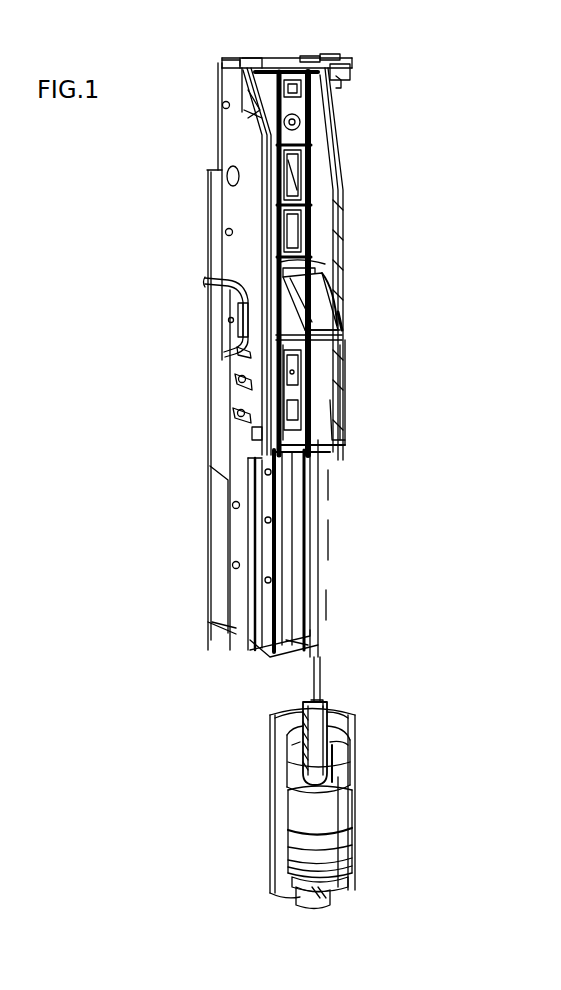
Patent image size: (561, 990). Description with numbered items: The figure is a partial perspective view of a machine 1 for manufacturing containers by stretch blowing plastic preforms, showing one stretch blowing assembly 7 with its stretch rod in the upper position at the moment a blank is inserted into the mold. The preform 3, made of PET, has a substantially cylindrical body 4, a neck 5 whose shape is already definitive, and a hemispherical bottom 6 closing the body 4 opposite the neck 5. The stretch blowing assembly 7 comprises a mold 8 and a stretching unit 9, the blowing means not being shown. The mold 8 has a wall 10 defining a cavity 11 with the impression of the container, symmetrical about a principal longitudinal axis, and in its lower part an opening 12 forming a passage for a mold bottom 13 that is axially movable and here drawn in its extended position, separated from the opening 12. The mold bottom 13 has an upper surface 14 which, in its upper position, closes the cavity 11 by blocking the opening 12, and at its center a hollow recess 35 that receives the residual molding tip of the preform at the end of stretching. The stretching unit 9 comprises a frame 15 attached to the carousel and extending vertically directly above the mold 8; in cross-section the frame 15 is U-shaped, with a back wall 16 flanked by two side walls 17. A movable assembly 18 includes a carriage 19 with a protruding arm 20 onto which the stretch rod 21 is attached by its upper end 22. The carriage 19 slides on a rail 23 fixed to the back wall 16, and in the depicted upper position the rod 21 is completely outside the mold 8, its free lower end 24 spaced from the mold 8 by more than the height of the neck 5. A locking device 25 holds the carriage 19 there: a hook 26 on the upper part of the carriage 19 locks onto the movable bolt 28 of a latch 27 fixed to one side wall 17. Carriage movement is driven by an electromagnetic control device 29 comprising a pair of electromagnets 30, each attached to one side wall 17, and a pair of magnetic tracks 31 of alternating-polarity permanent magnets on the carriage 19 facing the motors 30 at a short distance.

The machine 1 is at (452, 247).
The preform 3 is at (350, 746).
The body 4 is at (333, 777).
The neck 5 is at (325, 707).
The bottom 6 is at (346, 791).
The stretch blowing assembly 7 is at (150, 665).
The mold 8 is at (268, 748).
The stretching unit 9 is at (216, 641).
The wall 10 is at (281, 809).
The cavity 11 is at (300, 820).
The opening 12 is at (338, 880).
The mold bottom 13 is at (306, 889).
The upper surface 14 is at (336, 872).
The frame 15 is at (346, 238).
The back wall 16 is at (255, 66).
The side walls 17 is at (228, 146).
The movable assembly 18 is at (316, 152).
The carriage 19 is at (304, 197).
The protruding arm 20 is at (336, 301).
The stretch rod 21 is at (331, 410).
The upper end 22 is at (341, 327).
The rail 23 is at (310, 227).
The free lower end 24 is at (311, 706).
The locking device 25 is at (343, 83).
The hook 26 is at (312, 56).
The latch 27 is at (350, 67).
The movable bolt 28 is at (330, 58).
The electromagnetic control device 29 is at (212, 281).
The electromagnets 30 is at (248, 383).
The magnetic tracks 31 is at (276, 91).
The hollow recess 35 is at (325, 890).